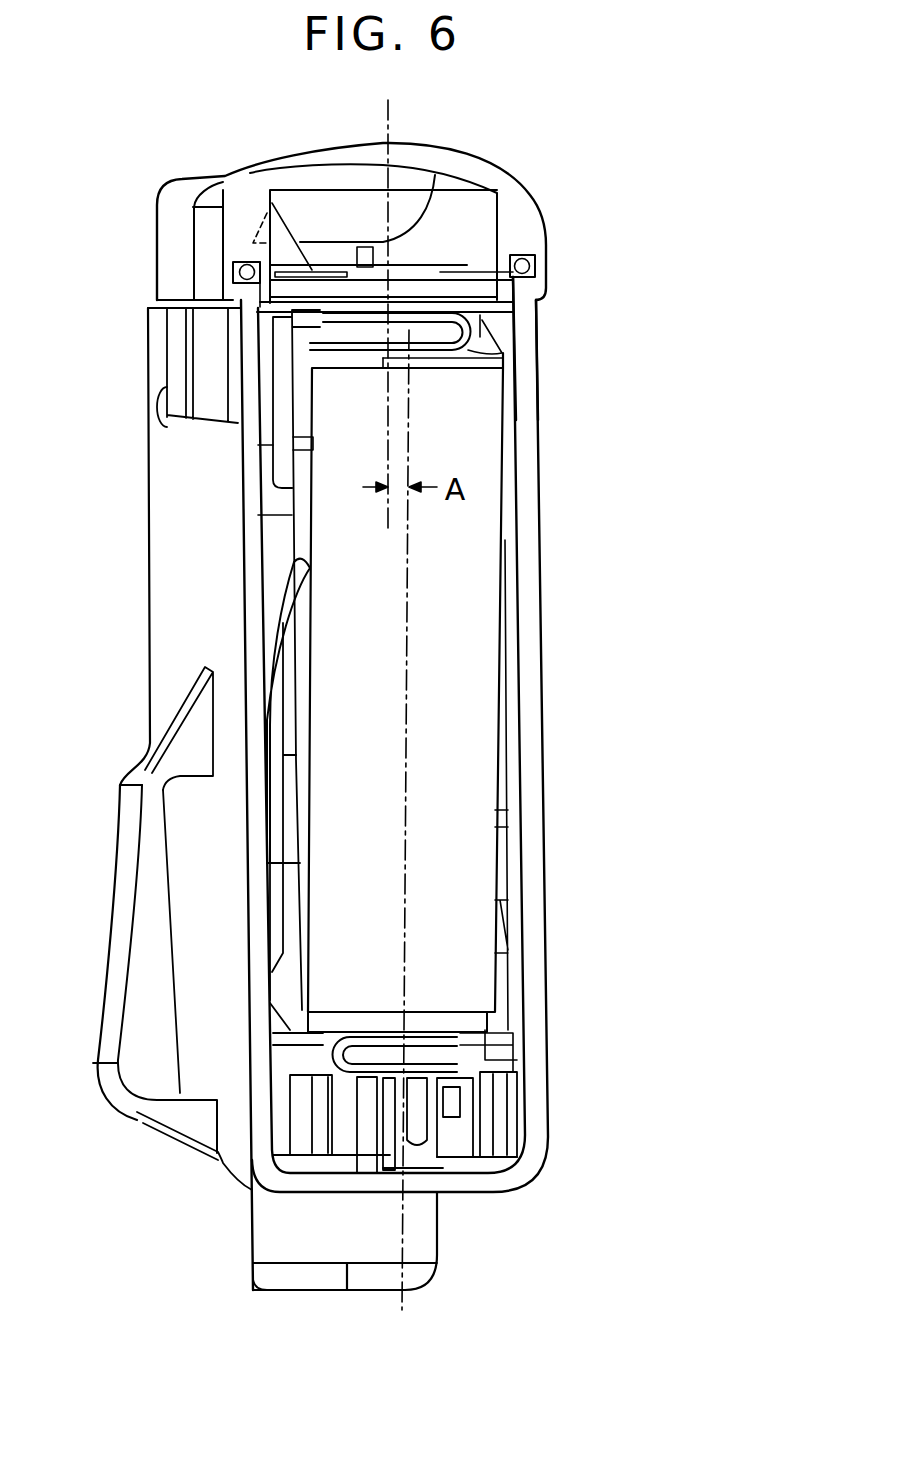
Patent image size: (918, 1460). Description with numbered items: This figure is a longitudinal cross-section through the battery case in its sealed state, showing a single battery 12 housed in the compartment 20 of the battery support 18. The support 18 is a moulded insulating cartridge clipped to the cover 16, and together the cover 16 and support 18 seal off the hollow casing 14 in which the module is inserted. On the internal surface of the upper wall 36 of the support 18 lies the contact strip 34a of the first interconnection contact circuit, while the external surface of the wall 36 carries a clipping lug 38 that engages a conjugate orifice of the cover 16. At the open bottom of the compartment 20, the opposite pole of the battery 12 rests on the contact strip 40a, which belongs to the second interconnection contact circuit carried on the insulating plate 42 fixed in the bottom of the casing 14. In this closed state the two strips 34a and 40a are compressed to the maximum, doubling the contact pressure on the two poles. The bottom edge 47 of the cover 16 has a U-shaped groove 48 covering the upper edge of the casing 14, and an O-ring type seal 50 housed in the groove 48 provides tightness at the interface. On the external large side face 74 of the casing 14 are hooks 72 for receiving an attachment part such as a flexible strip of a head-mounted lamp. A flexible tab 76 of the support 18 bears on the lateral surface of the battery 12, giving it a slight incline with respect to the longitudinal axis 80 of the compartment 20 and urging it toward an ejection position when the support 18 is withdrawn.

The battery 12 is at (465, 657).
The hollow casing 14 is at (515, 1165).
The cover 16 is at (497, 182).
The battery support 18 is at (458, 276).
The compartment 20 is at (290, 997).
The contact strip 34a is at (503, 362).
The upper wall 36 is at (410, 307).
The clipping lug 38 is at (292, 250).
The contact strip 40a is at (355, 1082).
The insulating plate 42 is at (493, 1065).
The bottom edge 47 is at (547, 278).
The U-shaped groove 48 is at (243, 258).
The O-ring type seal 50 is at (546, 240).
The hook 72 is at (120, 869).
The external large side face 74 is at (148, 590).
The flexible tab 76 is at (298, 640).
The longitudinal axis 80 is at (386, 402).